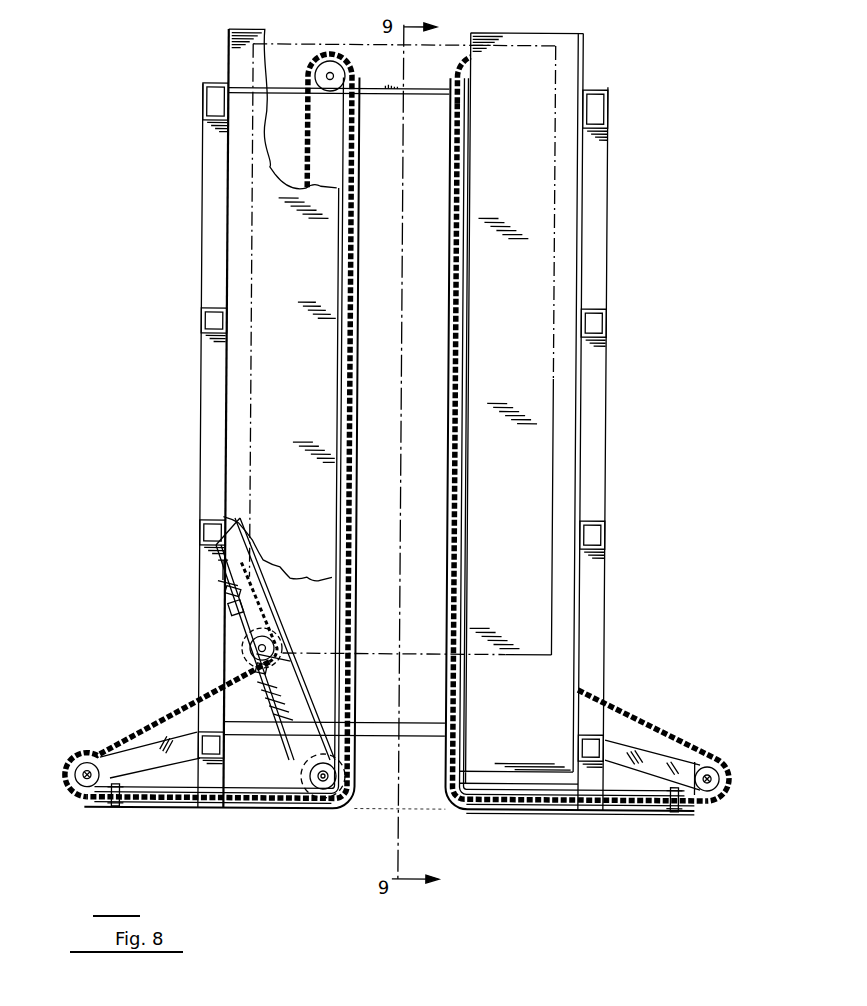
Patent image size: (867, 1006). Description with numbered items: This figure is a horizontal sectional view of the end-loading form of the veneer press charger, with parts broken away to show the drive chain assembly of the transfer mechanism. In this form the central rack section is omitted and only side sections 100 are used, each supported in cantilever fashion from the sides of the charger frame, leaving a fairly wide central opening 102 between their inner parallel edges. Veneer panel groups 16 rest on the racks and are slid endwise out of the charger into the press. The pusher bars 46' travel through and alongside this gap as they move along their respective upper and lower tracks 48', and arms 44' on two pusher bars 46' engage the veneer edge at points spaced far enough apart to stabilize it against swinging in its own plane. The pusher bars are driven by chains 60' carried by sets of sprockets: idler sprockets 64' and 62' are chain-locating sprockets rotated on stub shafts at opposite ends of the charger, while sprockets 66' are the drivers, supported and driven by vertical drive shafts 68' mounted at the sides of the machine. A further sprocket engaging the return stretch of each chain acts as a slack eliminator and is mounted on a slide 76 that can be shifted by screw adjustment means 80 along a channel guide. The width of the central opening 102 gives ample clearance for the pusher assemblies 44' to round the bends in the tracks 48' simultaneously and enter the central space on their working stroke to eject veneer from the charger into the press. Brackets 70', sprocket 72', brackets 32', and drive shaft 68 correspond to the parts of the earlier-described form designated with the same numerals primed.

The side sections 100 is at (249, 60).
The veneer panel groups 16 is at (532, 653).
The mounting bracket 32' is at (406, 428).
The tracks 48' is at (391, 460).
The chains 60' is at (399, 452).
The idler sprocket 64' is at (354, 71).
The arm sprocket 72' is at (275, 639).
The screw adjustment means 80 is at (232, 570).
The slide 76 is at (247, 623).
The pivot arm 70' is at (400, 762).
The vertical drive shafts 68' is at (65, 766).
The lower sprocket 68 is at (739, 784).
The sprockets 66' is at (402, 795).
The idler sprocket 62' is at (347, 776).
The pusher bars 46' is at (395, 816).
The arms 44' is at (580, 830).
The central openings 102 is at (389, 800).